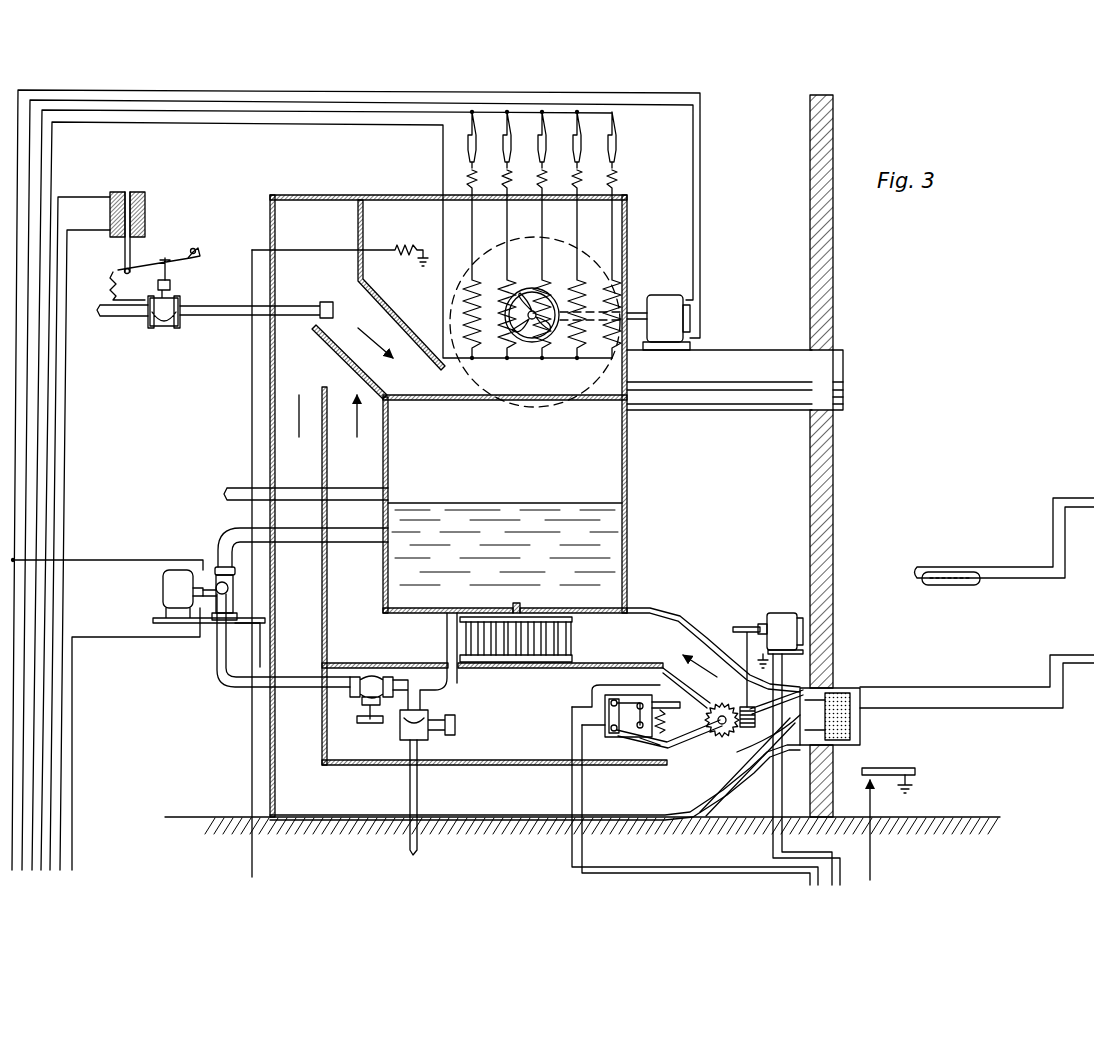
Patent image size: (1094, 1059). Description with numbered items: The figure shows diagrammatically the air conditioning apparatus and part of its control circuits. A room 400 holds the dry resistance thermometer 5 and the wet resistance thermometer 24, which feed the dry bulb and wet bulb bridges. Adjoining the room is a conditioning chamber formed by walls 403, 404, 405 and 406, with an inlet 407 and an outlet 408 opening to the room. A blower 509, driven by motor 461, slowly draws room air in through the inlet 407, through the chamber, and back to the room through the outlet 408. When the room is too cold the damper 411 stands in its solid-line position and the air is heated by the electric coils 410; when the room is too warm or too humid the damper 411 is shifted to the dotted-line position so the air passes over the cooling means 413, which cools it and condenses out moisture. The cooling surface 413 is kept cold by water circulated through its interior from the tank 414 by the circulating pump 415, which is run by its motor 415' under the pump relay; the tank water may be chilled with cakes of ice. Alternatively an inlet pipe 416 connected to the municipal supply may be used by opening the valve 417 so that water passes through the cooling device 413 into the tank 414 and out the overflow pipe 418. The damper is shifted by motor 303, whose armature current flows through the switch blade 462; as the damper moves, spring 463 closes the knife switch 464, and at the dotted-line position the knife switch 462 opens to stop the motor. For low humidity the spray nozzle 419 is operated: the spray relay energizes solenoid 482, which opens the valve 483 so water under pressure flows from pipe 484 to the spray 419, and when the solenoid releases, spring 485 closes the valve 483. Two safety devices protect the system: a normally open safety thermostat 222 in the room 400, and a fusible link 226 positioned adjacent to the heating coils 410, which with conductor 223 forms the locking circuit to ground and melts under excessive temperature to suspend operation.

The room 400 is at (902, 456).
The wall 403 is at (520, 807).
The wall 404 is at (272, 470).
The wall 405 is at (405, 200).
The wall 406 is at (634, 463).
The inlet 407 is at (770, 745).
The outlet 408 is at (845, 371).
The electric heating coils 410 is at (612, 280).
The damper 411 is at (730, 735).
The cooling means 413 is at (575, 639).
The tank 414 is at (505, 526).
The circulating pump 415 is at (280, 605).
The motor 415' is at (188, 596).
The inlet pipe 416 is at (418, 790).
The valve 417 is at (400, 724).
The overflow pipe 418 is at (232, 488).
The spray nozzle 419 is at (325, 305).
The motor 461 is at (665, 295).
The knife switch 462 is at (605, 700).
The spring 463 is at (667, 741).
The knife switch 464 is at (663, 792).
The solenoid 482 is at (146, 222).
The valve 483 is at (163, 328).
The pipe 484 is at (124, 322).
The spring 485 is at (113, 270).
The blower 509 is at (582, 382).
The fusible link 226 is at (340, 243).
The conductor 223 is at (252, 724).
The safety thermostat 222 is at (893, 768).
The motor 303 is at (790, 612).
The wet resistance thermometer 24 is at (858, 712).
The dry resistance thermometer 5 is at (955, 585).